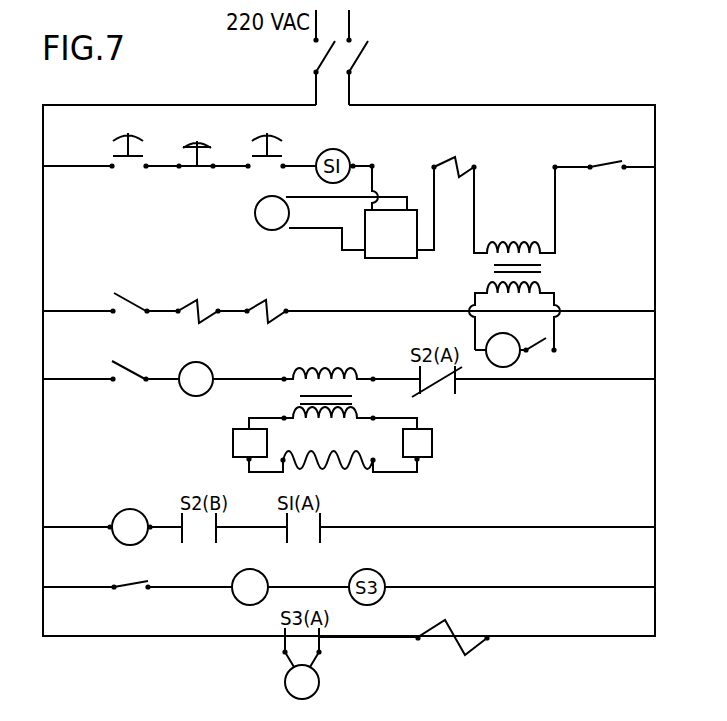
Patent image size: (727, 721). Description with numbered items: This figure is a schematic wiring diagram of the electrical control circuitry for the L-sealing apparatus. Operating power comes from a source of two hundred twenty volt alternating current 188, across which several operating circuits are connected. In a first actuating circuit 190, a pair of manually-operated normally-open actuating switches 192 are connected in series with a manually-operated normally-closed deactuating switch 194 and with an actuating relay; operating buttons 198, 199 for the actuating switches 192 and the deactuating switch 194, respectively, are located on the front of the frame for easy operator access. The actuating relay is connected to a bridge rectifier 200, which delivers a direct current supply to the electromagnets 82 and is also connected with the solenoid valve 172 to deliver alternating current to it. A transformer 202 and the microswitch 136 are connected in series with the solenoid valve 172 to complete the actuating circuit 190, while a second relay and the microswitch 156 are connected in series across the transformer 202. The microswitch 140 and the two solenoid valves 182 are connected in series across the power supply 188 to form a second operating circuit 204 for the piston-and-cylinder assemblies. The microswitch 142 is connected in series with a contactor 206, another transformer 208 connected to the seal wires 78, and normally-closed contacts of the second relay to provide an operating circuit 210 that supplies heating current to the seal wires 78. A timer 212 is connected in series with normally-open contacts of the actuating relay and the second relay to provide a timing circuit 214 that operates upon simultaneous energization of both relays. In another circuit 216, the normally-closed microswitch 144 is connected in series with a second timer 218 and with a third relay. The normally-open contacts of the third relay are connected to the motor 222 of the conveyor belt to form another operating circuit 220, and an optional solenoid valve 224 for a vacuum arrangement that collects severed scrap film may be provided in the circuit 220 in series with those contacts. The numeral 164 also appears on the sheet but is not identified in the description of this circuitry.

The source of 220 volt alternating electrical current 188 is at (352, 22).
The operating button 198 is at (129, 133).
The operating button 199 is at (196, 118).
The first actuating circuit 190 is at (78, 166).
The actuating switches 192 is at (134, 158).
The deactuating switch 194 is at (193, 160).
The electromagnets 82 is at (270, 230).
The bridge rectifier 200 is at (388, 258).
The solenoid valve 172 is at (455, 157).
The transformer 202 is at (513, 243).
The microswitch 136 is at (604, 168).
The second operating circuit 204 is at (80, 311).
The microswitch 140 is at (129, 299).
The solenoid valves 182 is at (204, 323).
The microswitch 142 is at (128, 364).
The contactor 206 is at (204, 396).
The operating circuit 210 is at (93, 381).
The transformer 208 is at (332, 368).
The microswitch 156 is at (553, 352).
The seal wires 78 is at (249, 460).
The timing circuit 214 is at (84, 526).
The timer 212 is at (118, 510).
The second timer 218 is at (238, 571).
The circuit 216 is at (70, 589).
The microswitch 144 is at (127, 589).
The operating circuit 220 is at (136, 640).
The motor 222 is at (320, 677).
The solenoid valve 224 is at (443, 645).
The component 164 is at (95, 718).